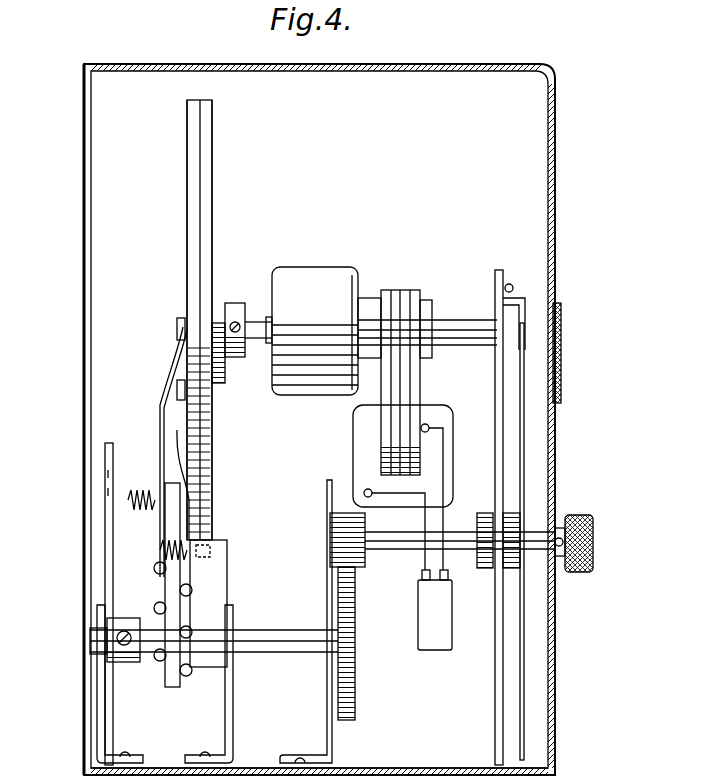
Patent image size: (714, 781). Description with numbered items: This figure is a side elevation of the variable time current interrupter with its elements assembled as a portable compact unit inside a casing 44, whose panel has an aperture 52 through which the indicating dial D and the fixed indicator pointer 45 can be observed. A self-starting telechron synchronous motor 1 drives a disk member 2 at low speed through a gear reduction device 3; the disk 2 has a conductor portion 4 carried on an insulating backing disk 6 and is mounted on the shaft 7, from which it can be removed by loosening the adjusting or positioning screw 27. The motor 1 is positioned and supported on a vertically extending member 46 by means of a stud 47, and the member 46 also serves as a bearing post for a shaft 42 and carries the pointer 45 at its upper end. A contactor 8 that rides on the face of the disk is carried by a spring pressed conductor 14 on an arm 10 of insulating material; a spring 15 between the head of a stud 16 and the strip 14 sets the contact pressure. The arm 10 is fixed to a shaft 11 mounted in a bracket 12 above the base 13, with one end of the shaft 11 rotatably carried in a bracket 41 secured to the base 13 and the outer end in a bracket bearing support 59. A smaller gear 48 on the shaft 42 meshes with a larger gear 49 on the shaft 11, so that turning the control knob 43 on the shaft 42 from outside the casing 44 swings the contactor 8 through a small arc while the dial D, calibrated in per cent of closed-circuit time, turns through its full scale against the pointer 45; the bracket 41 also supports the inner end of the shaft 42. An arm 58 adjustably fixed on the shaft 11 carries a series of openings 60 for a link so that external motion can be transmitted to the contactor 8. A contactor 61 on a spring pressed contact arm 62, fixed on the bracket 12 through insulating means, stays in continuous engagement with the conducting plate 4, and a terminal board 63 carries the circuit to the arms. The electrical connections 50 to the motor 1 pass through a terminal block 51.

The telechron synchronous motor 1 is at (383, 410).
The disk member 2 is at (200, 112).
The gear reduction device 3 is at (298, 280).
The conductor portion of the disk 4 is at (188, 132).
The backing disk 6 is at (212, 130).
The shaft 7 is at (252, 270).
The contactor 8 is at (178, 325).
The arm 10 is at (165, 595).
The shaft 11 is at (265, 637).
The bracket 12 is at (233, 713).
The base 13 is at (410, 768).
The spring pressed conductor 14 is at (160, 418).
The spring 15 is at (162, 548).
The stud 16 is at (135, 492).
The adjusting or positioning screw 27 is at (228, 305).
The bracket 41 is at (333, 750).
The shaft 42 is at (410, 545).
The control knob 43 is at (593, 540).
The casing 44 is at (556, 660).
The indicator pointer 45 is at (521, 325).
The vertically extending member 46 is at (496, 305).
The stud 47 is at (472, 340).
The smaller gear 48 is at (342, 513).
The larger gear 49 is at (356, 695).
The electrical connections 50 is at (430, 532).
The terminal block 51 is at (418, 610).
The aperture 52 is at (561, 355).
The arm 58 is at (105, 562).
The bracket bearing support 59 is at (97, 714).
The openings 60 is at (104, 490).
The contactor 61 is at (178, 388).
The spring pressed contact arm 62 is at (177, 444).
The terminal board 63 is at (222, 580).
The indicating dial D is at (524, 352).